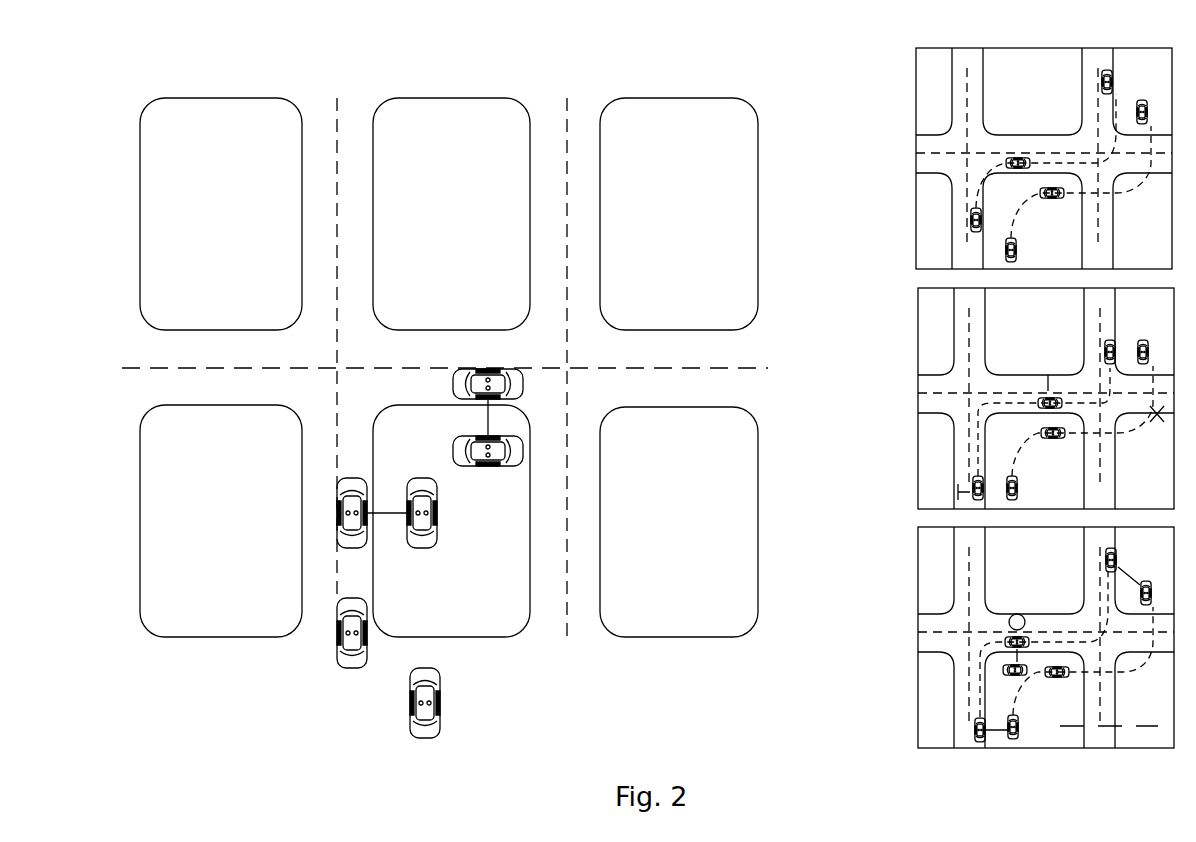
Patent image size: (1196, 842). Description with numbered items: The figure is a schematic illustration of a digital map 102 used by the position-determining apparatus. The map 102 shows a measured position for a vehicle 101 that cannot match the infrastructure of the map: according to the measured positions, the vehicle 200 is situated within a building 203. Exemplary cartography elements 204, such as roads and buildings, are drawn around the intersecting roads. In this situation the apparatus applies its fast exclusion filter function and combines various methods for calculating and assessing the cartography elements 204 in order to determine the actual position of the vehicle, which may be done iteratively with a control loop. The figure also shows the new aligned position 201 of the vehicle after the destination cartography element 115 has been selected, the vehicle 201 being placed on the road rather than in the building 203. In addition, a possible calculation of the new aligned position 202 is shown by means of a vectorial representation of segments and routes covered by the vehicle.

The digital map 102 is at (164, 62).
The cartography elements 204 is at (258, 110).
The building 203 is at (443, 330).
The destination cartography element 115 is at (320, 608).
The new aligned position 201 is at (332, 655).
The vehicle 101 is at (410, 732).
The vehicle 200 is at (497, 463).
The calculation of the new aligned position 202 is at (898, 762).